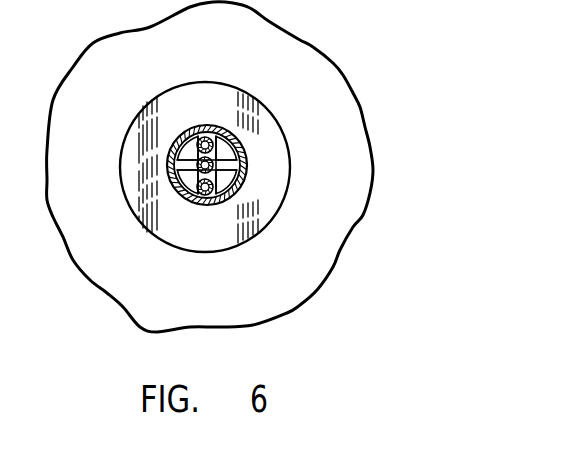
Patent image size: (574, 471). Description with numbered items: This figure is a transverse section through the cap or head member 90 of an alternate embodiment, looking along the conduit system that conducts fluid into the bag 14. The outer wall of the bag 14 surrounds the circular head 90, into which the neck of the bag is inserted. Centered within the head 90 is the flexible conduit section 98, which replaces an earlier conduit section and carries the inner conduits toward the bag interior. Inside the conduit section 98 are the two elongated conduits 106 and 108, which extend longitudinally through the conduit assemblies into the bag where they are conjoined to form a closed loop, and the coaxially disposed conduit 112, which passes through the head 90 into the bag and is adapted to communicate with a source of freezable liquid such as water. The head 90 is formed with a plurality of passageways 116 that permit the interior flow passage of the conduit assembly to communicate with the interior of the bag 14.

The bag 14 is at (360, 107).
The cap or head member 90 is at (289, 182).
The flexible conduit section 98 is at (236, 137).
The elongated conduit 106 is at (203, 127).
The elongated conduit 108 is at (203, 207).
The coaxially disposed conduit 112 is at (247, 163).
The passageways 116 is at (172, 152).